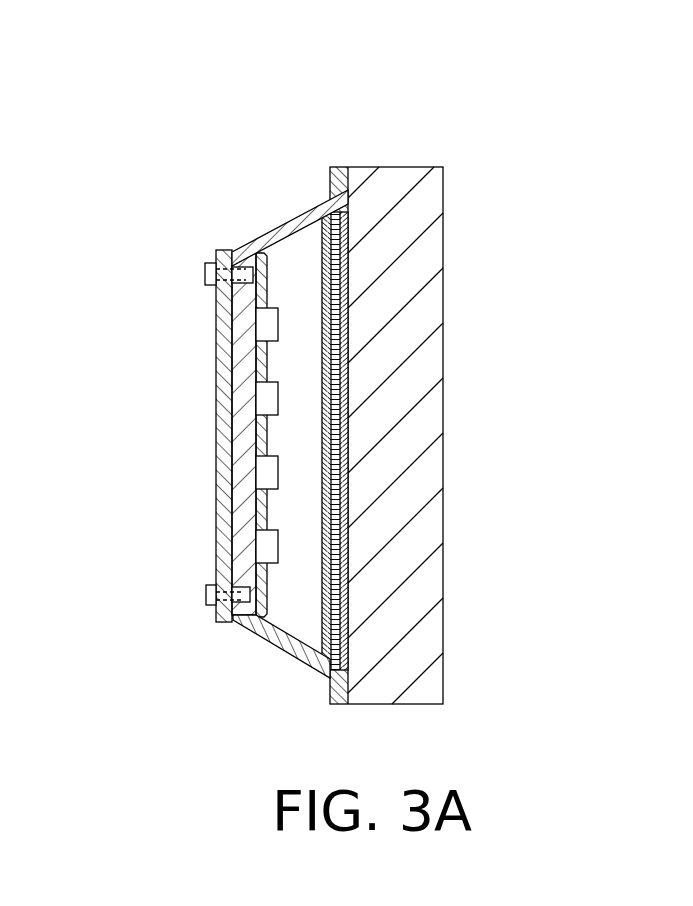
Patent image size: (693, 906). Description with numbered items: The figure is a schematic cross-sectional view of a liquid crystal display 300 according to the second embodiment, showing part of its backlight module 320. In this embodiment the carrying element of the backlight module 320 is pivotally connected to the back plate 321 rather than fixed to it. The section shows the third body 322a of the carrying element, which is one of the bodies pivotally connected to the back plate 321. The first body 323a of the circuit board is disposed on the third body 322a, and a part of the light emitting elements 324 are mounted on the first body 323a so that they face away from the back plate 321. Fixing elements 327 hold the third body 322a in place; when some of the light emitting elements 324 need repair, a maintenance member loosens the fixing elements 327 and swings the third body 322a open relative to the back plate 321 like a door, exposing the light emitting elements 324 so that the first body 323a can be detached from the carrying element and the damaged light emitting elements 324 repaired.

The liquid crystal display 300 is at (680, 650).
The backlight module 320 is at (309, 349).
The back plate 321 is at (292, 219).
The third body 322a is at (216, 320).
The first body 323a is at (235, 468).
The light emitting elements 324 is at (275, 328).
The fixing elements 327 is at (205, 272).